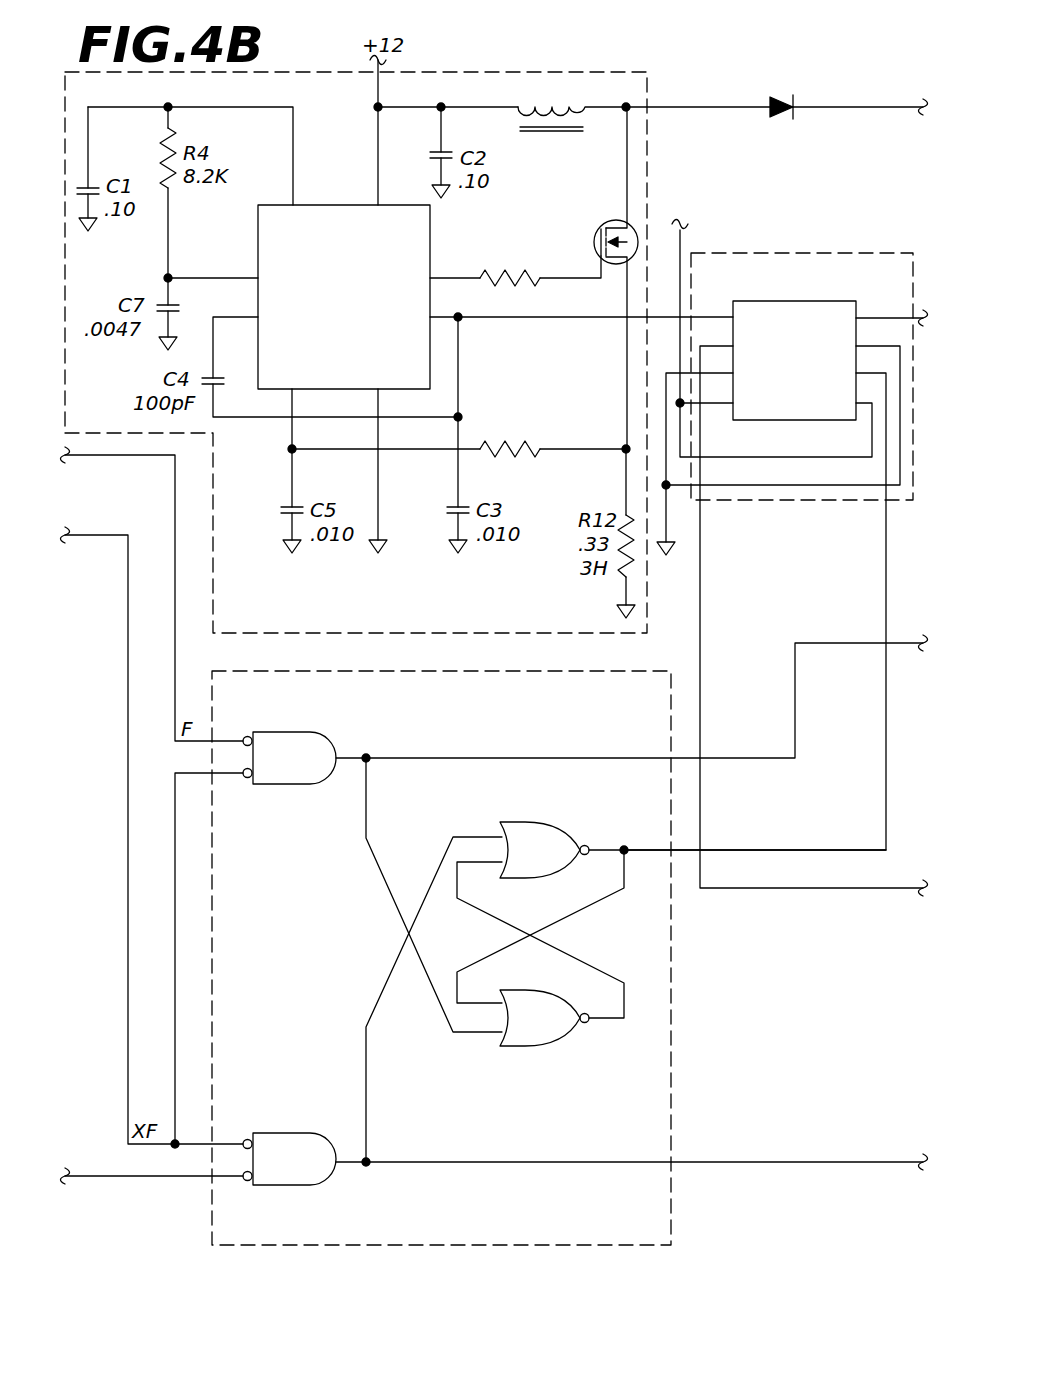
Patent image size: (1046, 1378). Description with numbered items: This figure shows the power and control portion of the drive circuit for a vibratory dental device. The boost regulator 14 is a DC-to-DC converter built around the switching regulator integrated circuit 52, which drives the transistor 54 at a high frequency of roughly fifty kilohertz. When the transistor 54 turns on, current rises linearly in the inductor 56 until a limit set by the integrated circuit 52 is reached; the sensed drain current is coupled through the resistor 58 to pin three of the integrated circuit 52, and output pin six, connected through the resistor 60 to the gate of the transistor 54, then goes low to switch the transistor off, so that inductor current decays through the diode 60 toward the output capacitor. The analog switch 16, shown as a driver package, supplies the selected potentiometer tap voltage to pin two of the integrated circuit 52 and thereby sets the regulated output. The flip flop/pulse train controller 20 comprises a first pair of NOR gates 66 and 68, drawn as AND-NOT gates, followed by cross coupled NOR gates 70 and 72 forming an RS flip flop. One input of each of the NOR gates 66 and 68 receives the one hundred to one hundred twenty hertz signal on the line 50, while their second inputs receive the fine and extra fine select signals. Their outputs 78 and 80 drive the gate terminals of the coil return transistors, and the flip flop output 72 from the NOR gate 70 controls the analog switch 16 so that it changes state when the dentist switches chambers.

The boost regulator 14 is at (430, 72).
The analog switch 16 is at (786, 253).
The flip flop/pulse train controller 20 is at (462, 1250).
The line 50 is at (115, 1178).
The integrated circuit 52 is at (332, 205).
The transistor 54 is at (632, 235).
The inductor 56 is at (585, 107).
The resistor 58 is at (532, 455).
The resistor 60 is at (540, 286).
The NOR gate 66 is at (322, 733).
The NOR gate 68 is at (328, 1180).
The NOR gate 70 is at (565, 822).
The NOR gate 72 is at (886, 585).
The output 78 is at (426, 758).
The output 80 is at (426, 1162).